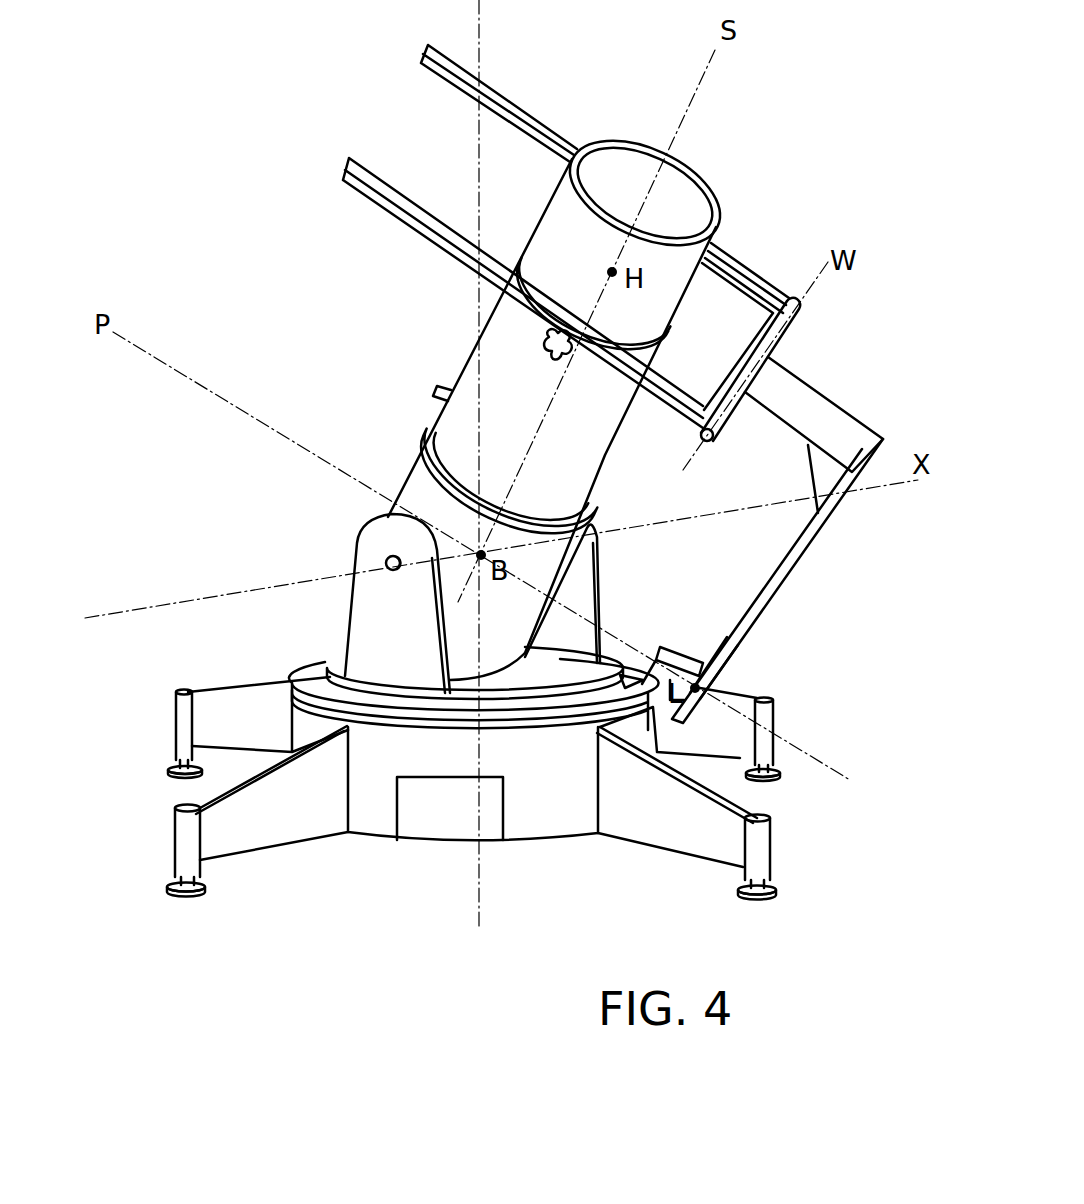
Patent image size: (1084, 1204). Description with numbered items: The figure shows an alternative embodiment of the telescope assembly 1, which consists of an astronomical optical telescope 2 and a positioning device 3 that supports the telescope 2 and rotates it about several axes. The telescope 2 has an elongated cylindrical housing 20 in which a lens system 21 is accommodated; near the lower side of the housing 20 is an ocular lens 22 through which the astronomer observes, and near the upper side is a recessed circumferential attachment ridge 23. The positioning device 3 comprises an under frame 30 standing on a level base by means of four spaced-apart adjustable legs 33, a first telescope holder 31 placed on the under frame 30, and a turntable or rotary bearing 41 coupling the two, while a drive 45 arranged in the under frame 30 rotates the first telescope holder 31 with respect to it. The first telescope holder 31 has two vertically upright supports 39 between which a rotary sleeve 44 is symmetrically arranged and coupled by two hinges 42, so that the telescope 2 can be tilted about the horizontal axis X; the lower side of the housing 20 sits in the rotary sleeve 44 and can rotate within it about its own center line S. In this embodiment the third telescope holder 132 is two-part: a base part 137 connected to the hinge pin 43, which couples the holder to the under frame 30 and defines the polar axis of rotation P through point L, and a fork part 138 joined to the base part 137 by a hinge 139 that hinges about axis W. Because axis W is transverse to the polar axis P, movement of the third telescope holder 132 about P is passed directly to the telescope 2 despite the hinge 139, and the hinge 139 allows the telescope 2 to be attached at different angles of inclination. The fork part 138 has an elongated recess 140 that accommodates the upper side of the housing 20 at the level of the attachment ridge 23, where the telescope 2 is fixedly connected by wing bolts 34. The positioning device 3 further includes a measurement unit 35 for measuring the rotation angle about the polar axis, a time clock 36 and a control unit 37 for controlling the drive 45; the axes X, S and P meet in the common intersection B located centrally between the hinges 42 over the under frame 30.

The telescope assembly 1 is at (226, 225).
The telescope 2 is at (752, 223).
The positioning device 3 is at (376, 880).
The housing 20 is at (546, 238).
The lens system 21 is at (604, 170).
The ocular lens 22 is at (441, 394).
The circumferential attachment ridge 23 is at (622, 336).
The under frame 30 is at (538, 808).
The first telescope holder 31 is at (596, 672).
The adjustable legs 33 is at (220, 738).
The wing bolts 34 is at (545, 350).
The measurement unit 35 is at (802, 679).
The time clock 36 is at (802, 679).
The control unit 37 is at (700, 677).
The supports 39 is at (360, 590).
The rotary bearing 41 is at (626, 670).
The hinges 42 is at (392, 555).
The hinge pin 43 is at (727, 664).
The rotary sleeve 44 is at (552, 562).
The drive 45 is at (444, 818).
The third telescope holder 132 is at (810, 405).
The base part 137 is at (862, 454).
The fork part 138 is at (432, 50).
The hinge 139 is at (806, 342).
The elongated recess 140 is at (523, 135).